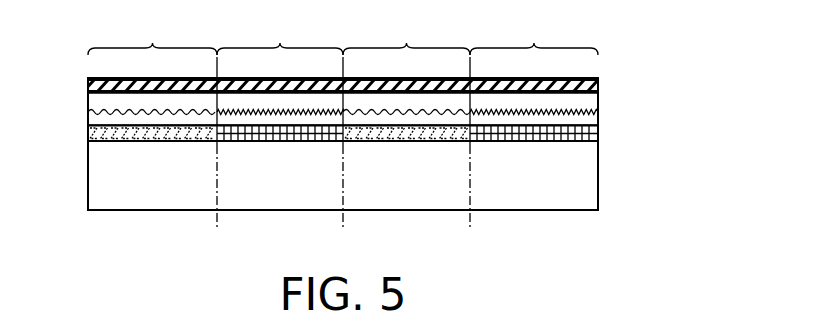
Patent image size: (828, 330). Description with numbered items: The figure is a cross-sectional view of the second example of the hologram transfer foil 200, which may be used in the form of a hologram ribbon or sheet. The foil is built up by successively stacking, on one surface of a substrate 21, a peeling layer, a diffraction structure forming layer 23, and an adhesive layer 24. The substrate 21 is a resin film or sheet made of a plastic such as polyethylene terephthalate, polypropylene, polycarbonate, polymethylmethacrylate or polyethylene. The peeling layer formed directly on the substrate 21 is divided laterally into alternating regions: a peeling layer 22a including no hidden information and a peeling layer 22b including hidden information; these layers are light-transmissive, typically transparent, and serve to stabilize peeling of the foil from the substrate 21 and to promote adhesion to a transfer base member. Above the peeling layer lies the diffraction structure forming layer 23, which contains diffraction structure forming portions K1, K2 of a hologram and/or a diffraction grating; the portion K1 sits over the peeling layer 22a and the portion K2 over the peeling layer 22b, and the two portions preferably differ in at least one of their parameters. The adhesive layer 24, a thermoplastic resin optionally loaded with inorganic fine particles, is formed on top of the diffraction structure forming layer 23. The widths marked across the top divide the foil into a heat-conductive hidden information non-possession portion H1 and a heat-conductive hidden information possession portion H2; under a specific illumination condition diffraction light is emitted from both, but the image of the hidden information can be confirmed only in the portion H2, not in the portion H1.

The hologram transfer foil 200 is at (626, 66).
The adhesive layer 24 is at (100, 86).
The diffraction structure forming layer 23 is at (315, 142).
The peeling layer including no hidden information 22a is at (135, 131).
The peeling layer including hidden information 22b is at (263, 129).
The diffraction structure forming portion K1 is at (188, 113).
The diffraction structure forming portion K2 is at (320, 114).
The substrate 21 is at (590, 189).
The heat-conductive hidden information non-possession portion H1 is at (279, 31).
The heat-conductive hidden information possession portion H2 is at (407, 31).